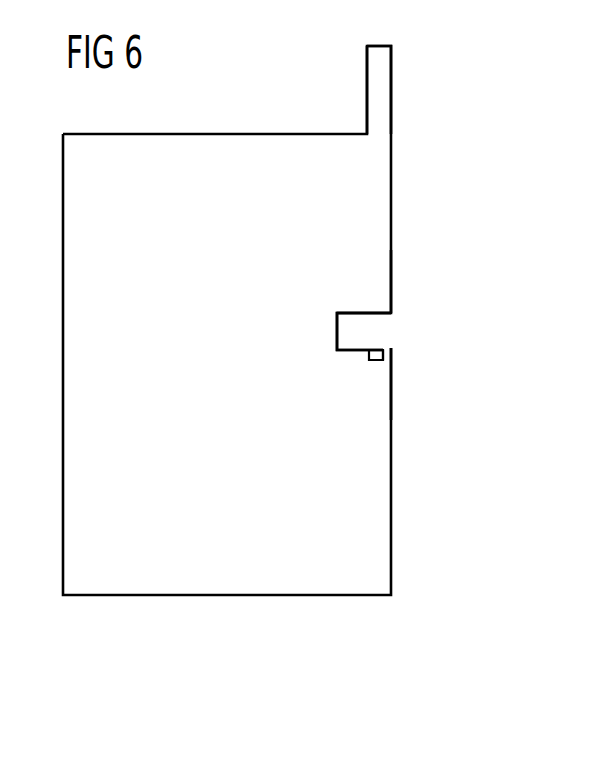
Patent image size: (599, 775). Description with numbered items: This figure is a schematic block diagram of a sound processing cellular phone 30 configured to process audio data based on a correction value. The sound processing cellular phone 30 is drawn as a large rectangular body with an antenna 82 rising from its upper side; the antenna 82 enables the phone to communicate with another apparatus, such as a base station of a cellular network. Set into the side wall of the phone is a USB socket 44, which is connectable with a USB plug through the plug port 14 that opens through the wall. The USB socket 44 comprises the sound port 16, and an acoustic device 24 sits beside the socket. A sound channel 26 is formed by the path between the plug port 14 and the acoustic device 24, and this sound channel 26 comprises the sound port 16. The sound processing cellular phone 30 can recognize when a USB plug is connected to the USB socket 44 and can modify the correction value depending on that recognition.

The sound processing cellular phone 30 is at (411, 516).
The antenna 82 is at (382, 95).
The plug port 14 is at (392, 321).
The sound port 16 is at (370, 350).
The USB socket 44 is at (358, 303).
The acoustic device 24 is at (375, 361).
The sound channel 26 is at (383, 351).